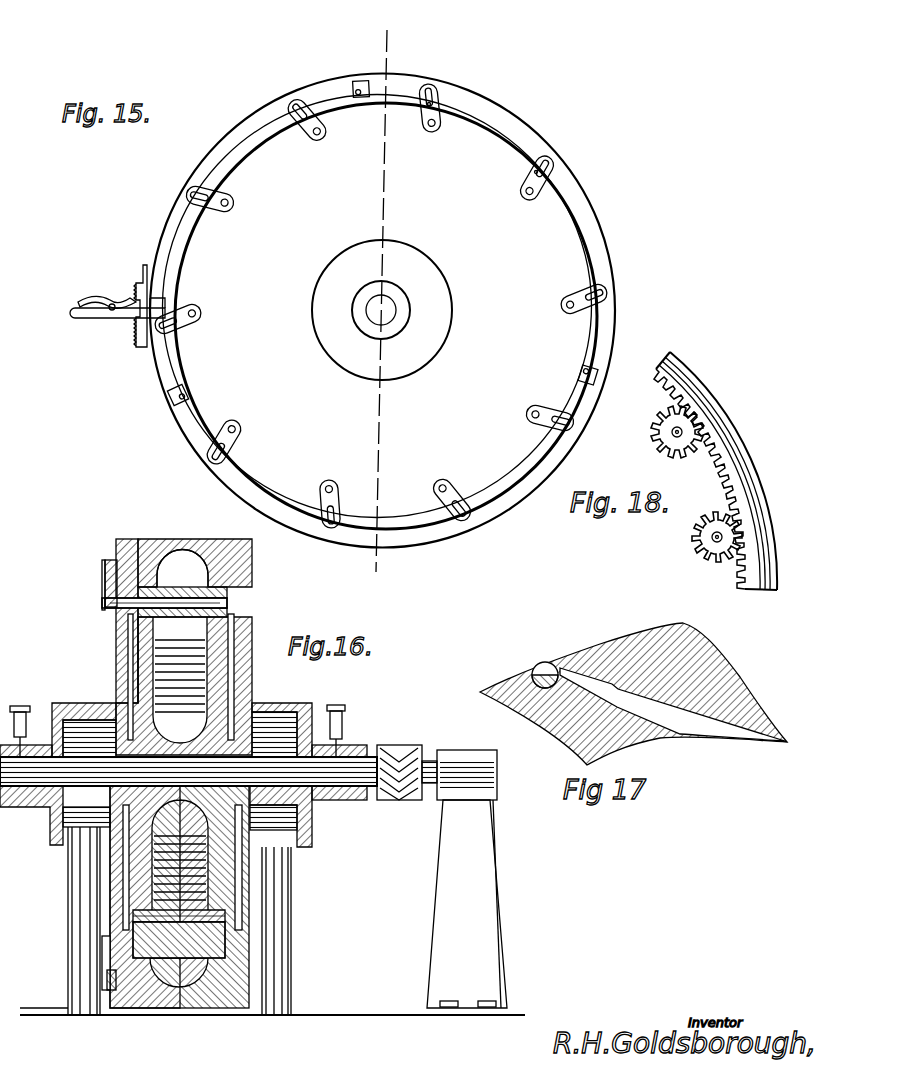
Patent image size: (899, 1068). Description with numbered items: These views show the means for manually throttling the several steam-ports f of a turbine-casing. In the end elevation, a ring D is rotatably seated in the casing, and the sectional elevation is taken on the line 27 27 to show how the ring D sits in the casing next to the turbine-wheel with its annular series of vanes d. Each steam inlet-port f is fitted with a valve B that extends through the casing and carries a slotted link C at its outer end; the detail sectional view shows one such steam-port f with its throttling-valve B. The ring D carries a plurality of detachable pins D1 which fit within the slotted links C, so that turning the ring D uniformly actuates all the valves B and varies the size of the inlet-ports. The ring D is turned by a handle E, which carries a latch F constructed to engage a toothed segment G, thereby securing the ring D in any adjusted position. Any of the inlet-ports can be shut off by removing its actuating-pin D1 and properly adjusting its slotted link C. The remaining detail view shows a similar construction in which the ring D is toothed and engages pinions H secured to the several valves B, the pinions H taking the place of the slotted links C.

In FIG. 15, the ring D is at (572, 213).
In FIG. 16, the ring D is at (110, 561).
In FIG. 15, the detachable pins D1 is at (298, 105).
In FIG. 16, the detachable pins D1 is at (101, 571).
In FIG. 15, the slotted link C is at (442, 110).
In FIG. 16, the slotted link C is at (104, 590).
In FIG. 15, the handle E is at (100, 316).
In FIG. 15, the latch F is at (127, 298).
In FIG. 15, the toothed segment G is at (140, 268).
In FIG. 18, the pinions H is at (655, 438).
In FIG. 16, the valve B is at (230, 603).
In FIG. 17, the valve B is at (531, 675).
In FIG. 16, the steam-ports f is at (227, 623).
In FIG. 17, the steam-ports f is at (582, 683).
In FIG. 16, the recess i is at (186, 560).
In FIG. 16, the vanes d is at (150, 648).
In FIG. 15, the section line 27 is at (381, 298).